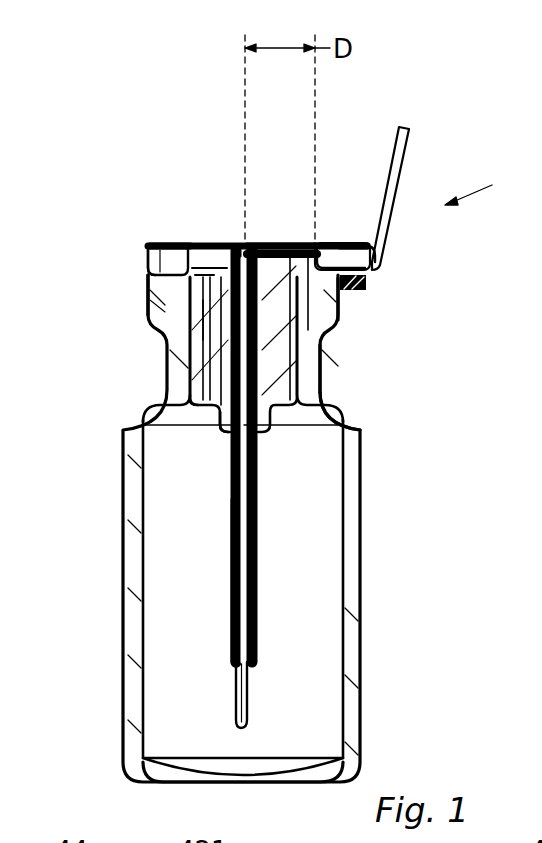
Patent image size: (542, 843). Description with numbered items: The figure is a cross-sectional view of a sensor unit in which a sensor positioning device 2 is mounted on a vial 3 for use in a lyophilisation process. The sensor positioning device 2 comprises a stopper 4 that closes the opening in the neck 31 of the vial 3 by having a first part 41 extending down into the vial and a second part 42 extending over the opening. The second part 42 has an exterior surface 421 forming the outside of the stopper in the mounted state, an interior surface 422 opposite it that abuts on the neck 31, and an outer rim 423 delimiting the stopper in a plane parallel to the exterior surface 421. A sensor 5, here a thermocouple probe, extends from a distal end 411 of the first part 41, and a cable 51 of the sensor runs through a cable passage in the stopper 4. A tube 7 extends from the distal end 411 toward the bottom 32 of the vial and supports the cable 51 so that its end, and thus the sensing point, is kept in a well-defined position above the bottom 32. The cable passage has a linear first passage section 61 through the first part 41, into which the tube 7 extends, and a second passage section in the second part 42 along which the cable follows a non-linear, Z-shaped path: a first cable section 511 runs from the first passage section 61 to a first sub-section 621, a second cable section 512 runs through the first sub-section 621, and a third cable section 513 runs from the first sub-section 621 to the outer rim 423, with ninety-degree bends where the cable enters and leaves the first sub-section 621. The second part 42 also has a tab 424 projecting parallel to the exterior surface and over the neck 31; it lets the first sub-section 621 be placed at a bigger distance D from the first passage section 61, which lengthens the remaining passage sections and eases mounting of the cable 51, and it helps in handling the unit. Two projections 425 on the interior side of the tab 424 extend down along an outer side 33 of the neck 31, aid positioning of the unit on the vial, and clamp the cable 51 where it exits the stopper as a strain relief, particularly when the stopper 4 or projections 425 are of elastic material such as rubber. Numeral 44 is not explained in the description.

The sensor positioning device 2 is at (201, 232).
The vial 3 is at (378, 667).
The neck 31 is at (340, 355).
The bottom 32 is at (284, 757).
The outer side 33 is at (323, 395).
The stopper 4 is at (300, 434).
The first part 41 is at (200, 420).
The distal end 411 is at (228, 435).
The second part 42 is at (156, 263).
The exterior surface 421 is at (165, 245).
The interior surface 422 is at (190, 318).
The outer rim 423 is at (152, 262).
The tab 424 is at (364, 257).
The projections 425 is at (354, 312).
The stopper flange 44 is at (198, 322).
The sensor 5 is at (240, 708).
The cable 51 is at (406, 157).
The first cable section 511 is at (265, 245).
The second cable section 512 is at (348, 243).
The third cable section 513 is at (364, 293).
The first passage section 61 is at (175, 395).
The first sub-section 621 is at (190, 355).
The tube 7 is at (230, 583).